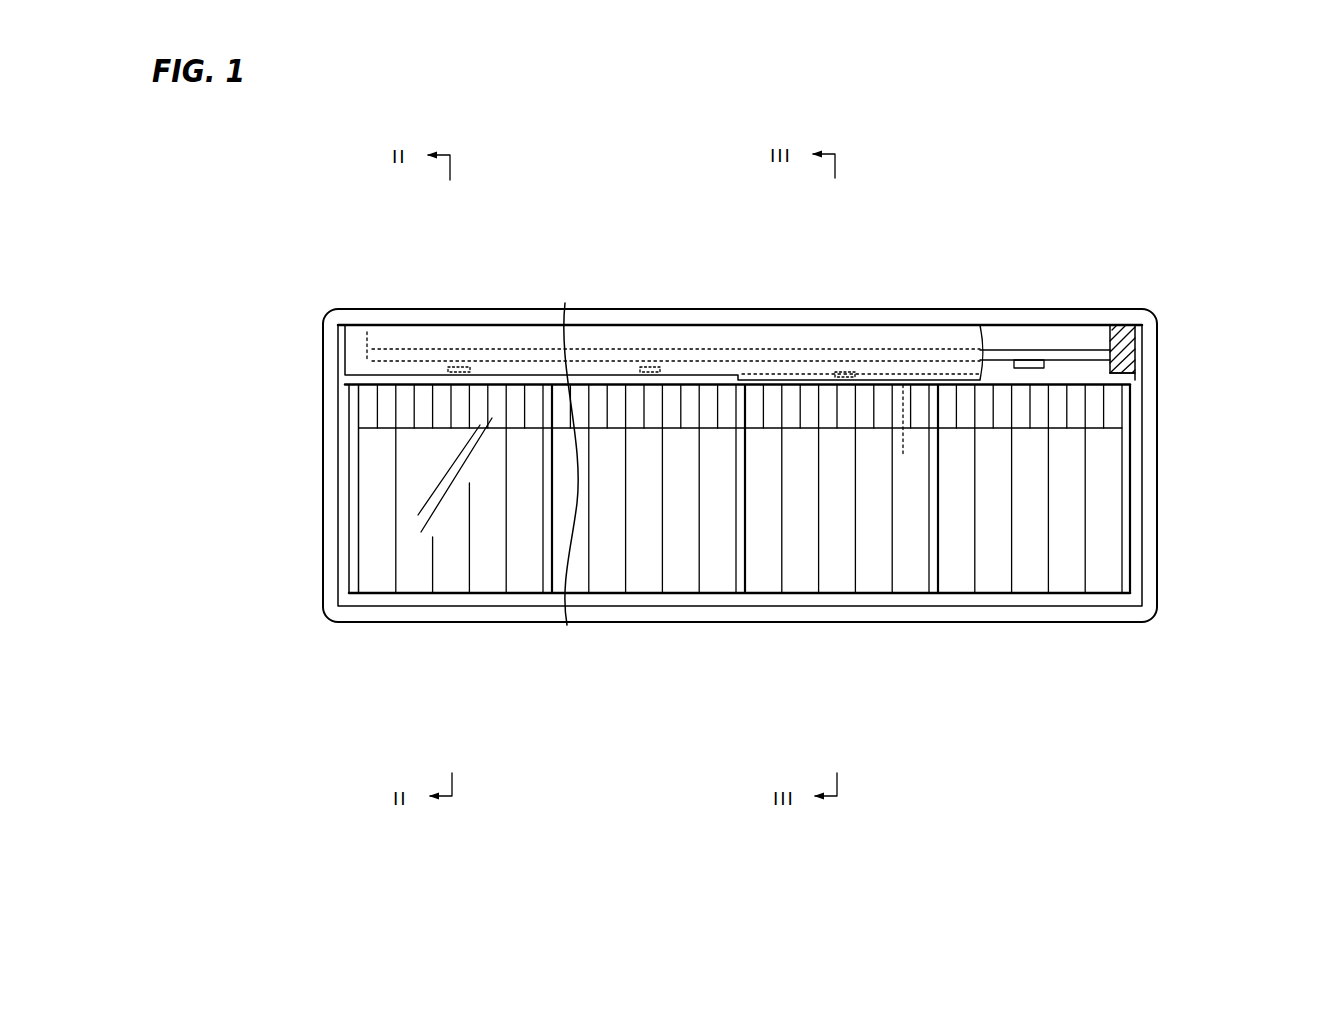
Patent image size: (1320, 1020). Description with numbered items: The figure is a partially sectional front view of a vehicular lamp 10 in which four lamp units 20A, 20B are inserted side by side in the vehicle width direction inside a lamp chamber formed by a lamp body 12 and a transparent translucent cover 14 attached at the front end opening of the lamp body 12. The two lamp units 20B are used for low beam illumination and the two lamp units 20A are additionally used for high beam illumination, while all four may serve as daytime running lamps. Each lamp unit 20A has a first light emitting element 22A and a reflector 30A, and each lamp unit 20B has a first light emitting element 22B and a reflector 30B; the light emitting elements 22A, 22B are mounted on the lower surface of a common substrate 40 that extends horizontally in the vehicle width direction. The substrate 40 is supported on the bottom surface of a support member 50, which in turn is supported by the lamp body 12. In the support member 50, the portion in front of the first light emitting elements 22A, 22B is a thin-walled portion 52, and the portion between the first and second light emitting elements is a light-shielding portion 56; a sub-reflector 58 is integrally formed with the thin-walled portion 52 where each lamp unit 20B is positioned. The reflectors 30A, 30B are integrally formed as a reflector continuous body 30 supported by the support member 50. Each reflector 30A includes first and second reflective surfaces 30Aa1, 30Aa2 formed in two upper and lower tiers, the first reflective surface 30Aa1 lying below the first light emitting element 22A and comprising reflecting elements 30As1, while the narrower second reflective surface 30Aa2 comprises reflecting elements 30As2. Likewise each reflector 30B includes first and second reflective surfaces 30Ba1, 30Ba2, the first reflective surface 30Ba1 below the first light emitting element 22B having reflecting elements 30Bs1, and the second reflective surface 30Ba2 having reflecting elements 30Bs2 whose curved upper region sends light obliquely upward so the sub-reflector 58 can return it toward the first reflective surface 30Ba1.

The vehicular lamp 10 is at (328, 200).
The lamp body 12 is at (1100, 307).
The translucent cover 14 is at (530, 304).
The support member 50 is at (910, 321).
The substrate 40 is at (1012, 338).
The light-shielding portion 56 is at (1052, 381).
The sub-reflector 58 is at (910, 432).
The thin-walled portion 52 is at (699, 370).
The reflector continuous body 30 is at (1078, 600).
The reflector 30A is at (402, 597).
The reflector 30B is at (790, 597).
The lamp unit 20A is at (448, 608).
The lamp unit 20B is at (833, 608).
The first light emitting element 22A is at (452, 375).
The first light emitting element 22B is at (838, 380).
The first reflective surface 30Aa1 is at (650, 535).
The second reflective surface 30Aa2 is at (667, 400).
The first reflective surface 30Ba1 is at (843, 535).
The second reflective surface 30Ba2 is at (860, 400).
The reflecting elements 30As1 is at (405, 557).
The reflecting elements 30As2 is at (383, 416).
The reflecting elements 30Bs1 is at (1072, 555).
The reflecting elements 30Bs2 is at (1112, 416).